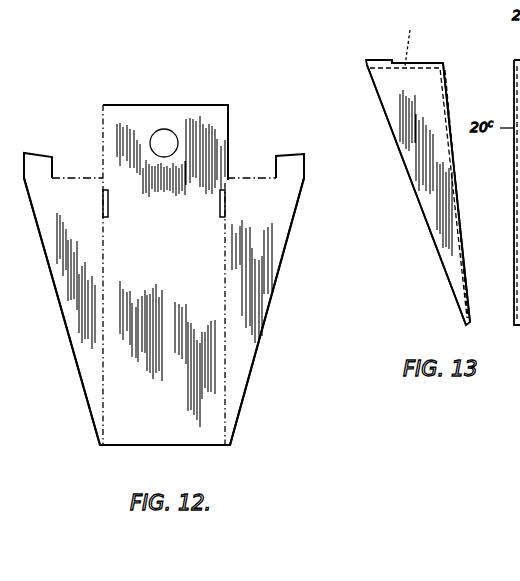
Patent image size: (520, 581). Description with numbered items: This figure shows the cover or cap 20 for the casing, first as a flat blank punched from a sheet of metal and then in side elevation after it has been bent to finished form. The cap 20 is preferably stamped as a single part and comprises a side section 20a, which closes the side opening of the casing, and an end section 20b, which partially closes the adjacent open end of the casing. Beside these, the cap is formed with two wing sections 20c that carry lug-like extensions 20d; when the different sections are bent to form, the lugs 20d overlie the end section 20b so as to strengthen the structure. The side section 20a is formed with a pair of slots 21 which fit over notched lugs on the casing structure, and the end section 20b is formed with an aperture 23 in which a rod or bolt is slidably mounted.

In FIG. 12, the cover or cap 20 is at (164, 275).
In FIG. 13, the cover or cap 20 is at (428, 200).
In FIG. 12, the side section 20a is at (182, 412).
In FIG. 13, the side section 20a is at (457, 202).
In FIG. 12, the end section 20b is at (192, 117).
In FIG. 13, the end section 20b is at (425, 63).
In FIG. 12, the wing sections 20c is at (70, 300).
In FIG. 13, the wing sections 20c is at (416, 160).
In FIG. 12, the lug-like extensions 20d is at (36, 158).
In FIG. 13, the lug-like extensions 20d is at (373, 60).
In FIG. 12, the slots 21 is at (110, 214).
In FIG. 13, the slots 21 is at (449, 87).
In FIG. 12, the aperture 23 is at (152, 131).
In FIG. 13, the aperture 23 is at (409, 38).